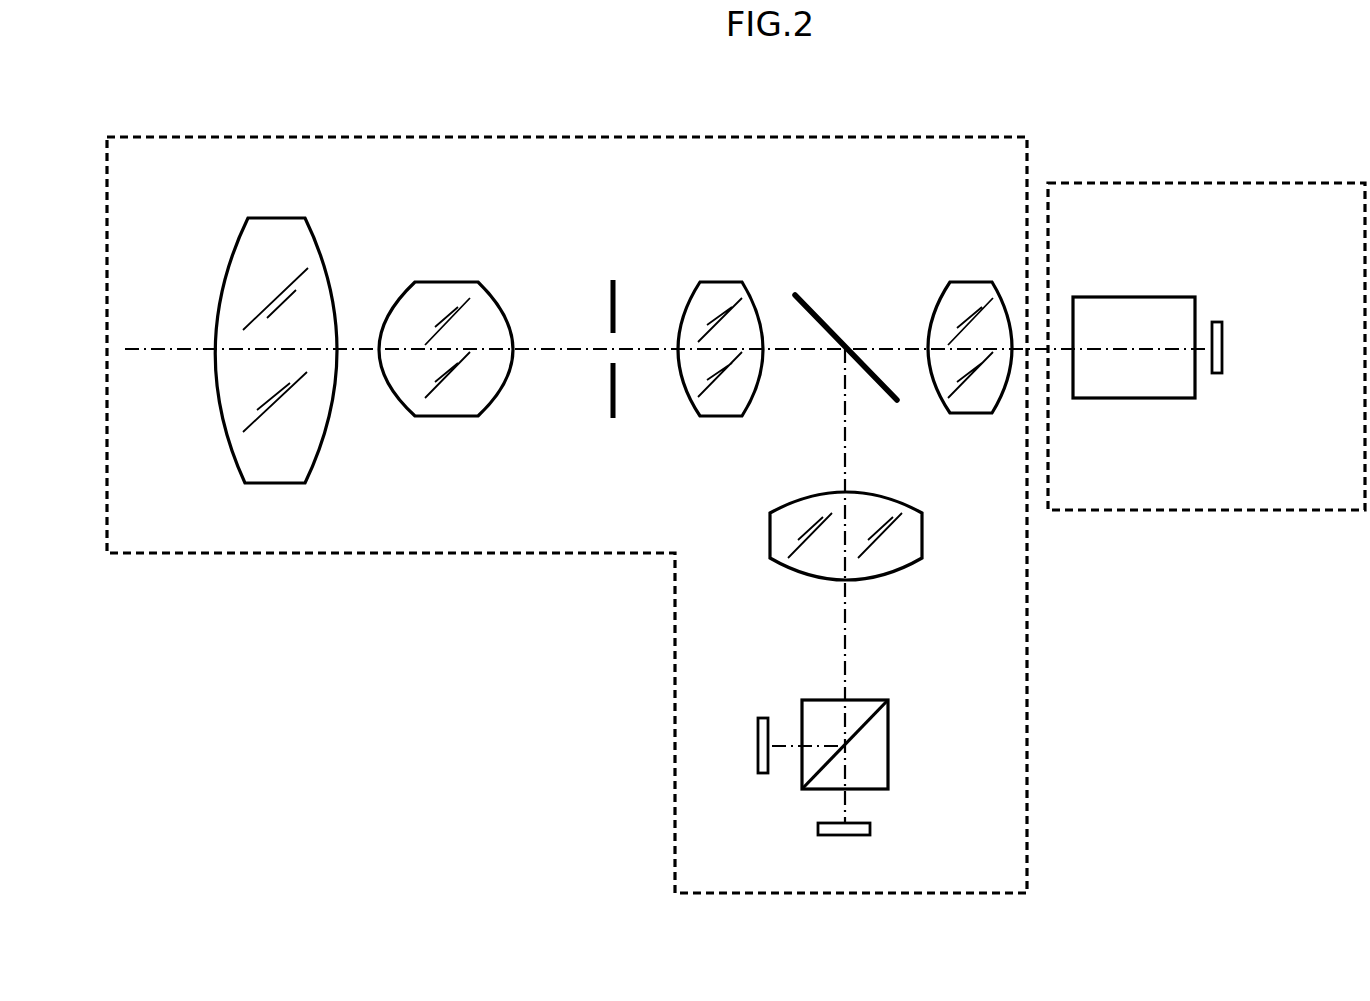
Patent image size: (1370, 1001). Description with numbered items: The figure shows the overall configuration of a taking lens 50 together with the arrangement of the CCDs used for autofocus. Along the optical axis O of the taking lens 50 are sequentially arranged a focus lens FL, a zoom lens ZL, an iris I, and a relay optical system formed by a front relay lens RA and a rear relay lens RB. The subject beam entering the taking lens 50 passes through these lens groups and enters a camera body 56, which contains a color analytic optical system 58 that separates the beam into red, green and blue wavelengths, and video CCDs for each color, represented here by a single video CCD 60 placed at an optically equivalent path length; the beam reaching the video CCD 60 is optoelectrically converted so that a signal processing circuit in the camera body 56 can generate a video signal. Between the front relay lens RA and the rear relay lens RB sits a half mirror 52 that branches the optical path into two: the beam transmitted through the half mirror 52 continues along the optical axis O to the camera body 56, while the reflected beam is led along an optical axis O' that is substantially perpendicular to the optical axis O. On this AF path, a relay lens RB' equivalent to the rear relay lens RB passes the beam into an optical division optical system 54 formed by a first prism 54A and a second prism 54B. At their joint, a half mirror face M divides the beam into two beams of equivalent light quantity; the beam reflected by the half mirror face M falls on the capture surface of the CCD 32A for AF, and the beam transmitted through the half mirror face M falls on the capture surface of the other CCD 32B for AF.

The taking lens 50 is at (825, 137).
The half mirror 52 is at (833, 330).
The optical division optical system 54 is at (873, 716).
The first prism 54A is at (812, 700).
The second prism 54B is at (888, 746).
The camera body 56 is at (1210, 183).
The color analytic optical system 58 is at (1133, 297).
The video CCD 60 is at (1222, 348).
The CCD for AF 32A is at (758, 740).
The CCD for AF 32B is at (870, 829).
The focus lens FL is at (278, 218).
The zoom lens ZL is at (445, 282).
The iris I is at (613, 280).
The front relay lens RA is at (718, 282).
The rear relay lens RB is at (970, 318).
The relay lens RB' is at (881, 536).
The optical axis O is at (152, 319).
The optical axis O' is at (873, 457).
The half mirror face M is at (868, 715).